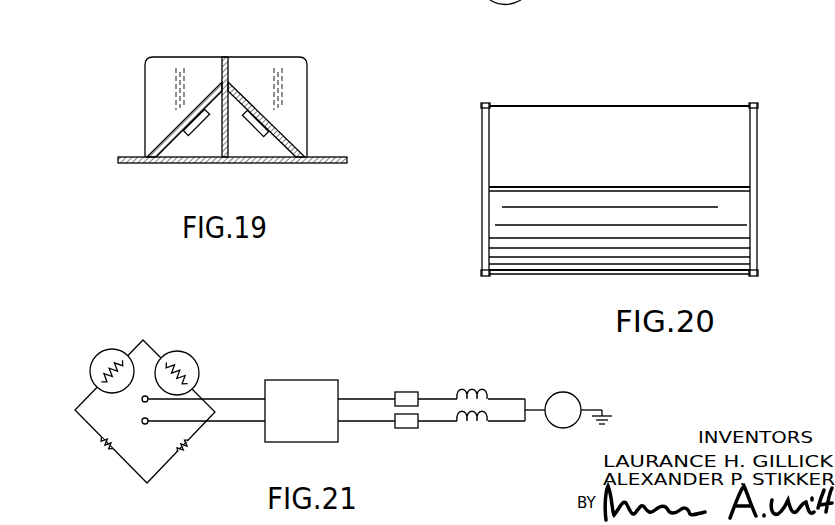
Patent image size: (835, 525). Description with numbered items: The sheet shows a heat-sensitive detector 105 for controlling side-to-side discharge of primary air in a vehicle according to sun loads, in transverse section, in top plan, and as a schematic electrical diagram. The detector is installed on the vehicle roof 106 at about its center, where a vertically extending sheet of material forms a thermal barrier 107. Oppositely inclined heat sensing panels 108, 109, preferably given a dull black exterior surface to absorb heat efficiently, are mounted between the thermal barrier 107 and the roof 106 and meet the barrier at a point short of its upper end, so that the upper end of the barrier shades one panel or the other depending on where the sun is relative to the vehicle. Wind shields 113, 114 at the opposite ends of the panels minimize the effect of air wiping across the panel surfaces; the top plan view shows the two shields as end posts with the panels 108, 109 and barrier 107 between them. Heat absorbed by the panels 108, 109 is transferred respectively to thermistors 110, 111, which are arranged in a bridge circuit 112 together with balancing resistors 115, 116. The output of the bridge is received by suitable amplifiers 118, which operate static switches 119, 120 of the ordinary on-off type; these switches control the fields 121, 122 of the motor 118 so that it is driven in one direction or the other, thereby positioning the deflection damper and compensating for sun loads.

In FIG. 19, the detector 105 is at (169, 45).
In FIG. 19, the roof 106 is at (212, 163).
In FIG. 19, the thermal barrier 107 is at (224, 57).
In FIG. 20, the thermal barrier 107 is at (738, 182).
In FIG. 19, the heat sensing panel 108 is at (176, 128).
In FIG. 20, the heat sensing panel 108 is at (622, 112).
In FIG. 19, the heat sensing panel 109 is at (255, 108).
In FIG. 20, the heat sensing panel 109 is at (598, 262).
In FIG. 19, the thermistor 110 is at (200, 127).
In FIG. 21, the thermistor 110 is at (110, 349).
In FIG. 19, the thermistor 111 is at (252, 128).
In FIG. 21, the thermistor 111 is at (195, 358).
In FIG. 21, the bridge circuit 112 is at (85, 424).
In FIG. 19, the wind shield 113 is at (296, 63).
In FIG. 20, the wind shield 113 is at (482, 170).
In FIG. 20, the wind shield 114 is at (756, 137).
In FIG. 21, the balancing resistor 115 is at (117, 452).
In FIG. 21, the balancing resistor 116 is at (184, 456).
In FIG. 21, the motor 118 is at (338, 379).
In FIG. 21, the static switch 119 is at (416, 391).
In FIG. 21, the static switch 120 is at (408, 429).
In FIG. 21, the field 121 is at (482, 392).
In FIG. 21, the field 122 is at (483, 424).